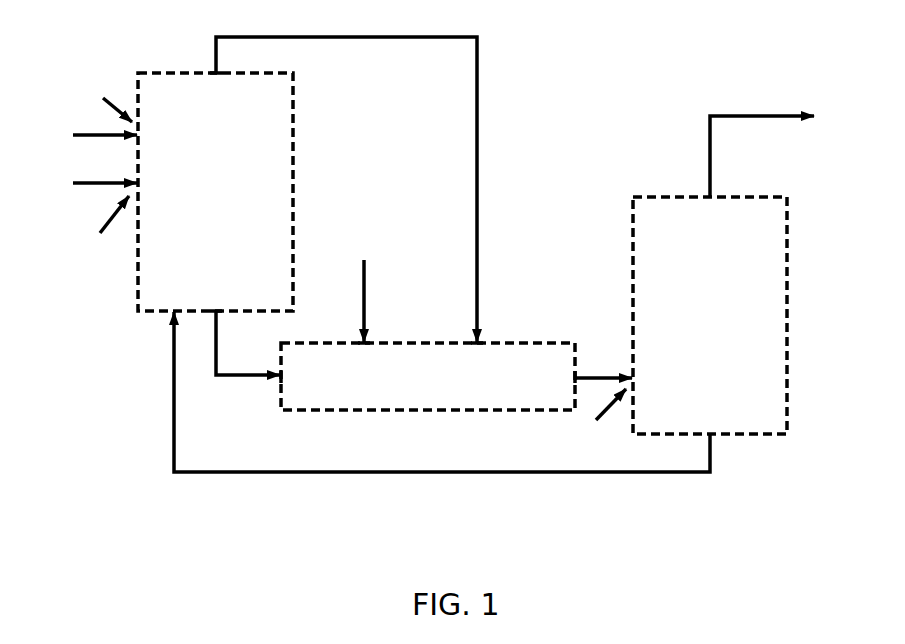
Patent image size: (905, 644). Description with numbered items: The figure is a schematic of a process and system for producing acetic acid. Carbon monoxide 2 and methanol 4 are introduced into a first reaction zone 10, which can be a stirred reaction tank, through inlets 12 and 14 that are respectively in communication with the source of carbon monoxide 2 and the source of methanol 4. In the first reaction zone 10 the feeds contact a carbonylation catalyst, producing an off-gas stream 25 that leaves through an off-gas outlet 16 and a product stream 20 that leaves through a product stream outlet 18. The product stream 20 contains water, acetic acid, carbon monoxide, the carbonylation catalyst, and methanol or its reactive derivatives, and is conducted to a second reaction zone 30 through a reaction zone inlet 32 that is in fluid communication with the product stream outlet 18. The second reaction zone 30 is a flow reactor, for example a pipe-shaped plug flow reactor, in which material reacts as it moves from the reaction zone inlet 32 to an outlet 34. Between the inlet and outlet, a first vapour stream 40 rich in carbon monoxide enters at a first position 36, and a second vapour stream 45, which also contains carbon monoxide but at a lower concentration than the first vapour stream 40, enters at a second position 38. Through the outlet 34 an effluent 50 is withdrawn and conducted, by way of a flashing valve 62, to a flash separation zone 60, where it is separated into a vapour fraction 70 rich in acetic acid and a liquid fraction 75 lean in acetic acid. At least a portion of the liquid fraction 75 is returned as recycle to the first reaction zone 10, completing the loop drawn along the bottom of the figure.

The carbon monoxide 2 is at (95, 135).
The methanol 4 is at (95, 183).
The first reaction zone 10 is at (227, 200).
The inlet 12 is at (104, 98).
The inlet 14 is at (99, 224).
The off-gas outlet 16 is at (216, 73).
The product stream outlet 18 is at (217, 310).
The product stream 20 is at (242, 376).
The off-gas stream 25 is at (216, 73).
The second reaction zone 30 is at (432, 382).
The reaction zone inlet 32 is at (283, 377).
The outlet 34 is at (575, 378).
The first position 36 is at (364, 345).
The second position 38 is at (480, 345).
The first vapour stream 40 is at (364, 286).
The second vapour stream 45 is at (480, 253).
The effluent 50 is at (597, 372).
The flash separation zone 60 is at (727, 320).
The flashing valve 62 is at (601, 419).
The vapour fraction 70 is at (776, 151).
The liquid fraction 75 is at (712, 460).